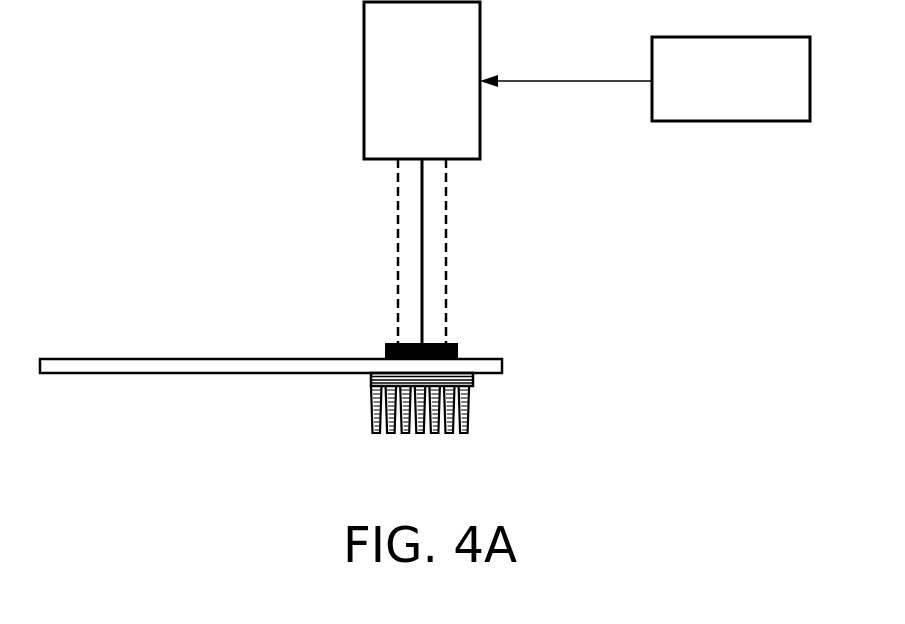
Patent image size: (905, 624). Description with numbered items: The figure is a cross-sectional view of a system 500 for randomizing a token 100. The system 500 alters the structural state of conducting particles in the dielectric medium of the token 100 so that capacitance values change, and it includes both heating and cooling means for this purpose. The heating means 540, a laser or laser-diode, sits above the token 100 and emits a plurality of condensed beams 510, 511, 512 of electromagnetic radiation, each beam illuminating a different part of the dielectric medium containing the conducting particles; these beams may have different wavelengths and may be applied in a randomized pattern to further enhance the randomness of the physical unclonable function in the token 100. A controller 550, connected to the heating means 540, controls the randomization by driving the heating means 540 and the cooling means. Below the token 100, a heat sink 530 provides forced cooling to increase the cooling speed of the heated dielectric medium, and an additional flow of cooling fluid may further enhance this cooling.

The system for randomizing a token 500 is at (188, 88).
The heating means 540 is at (441, 85).
The controller 550 is at (752, 92).
The condensed beam 510 is at (423, 238).
The condensed beam 511 is at (397, 206).
The condensed beam 512 is at (447, 205).
The token 100 is at (480, 338).
The heat sink 530 is at (428, 433).